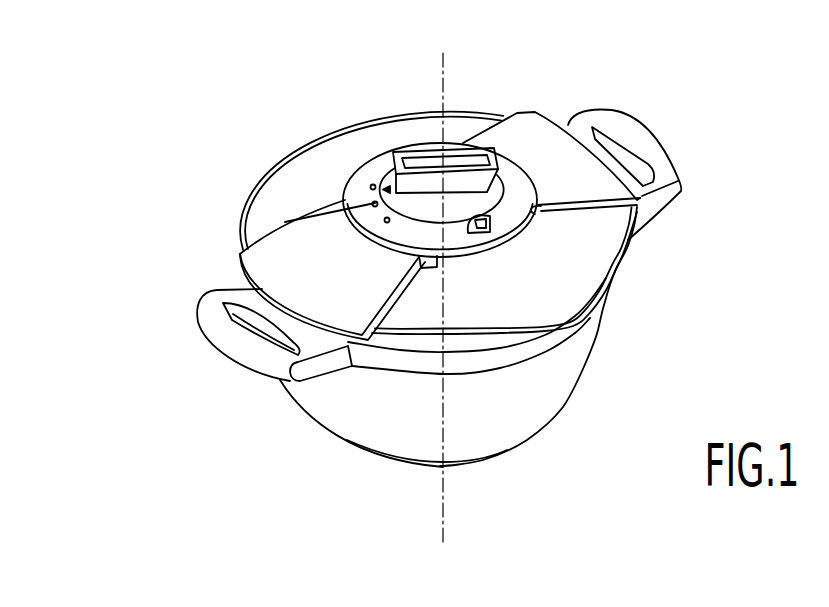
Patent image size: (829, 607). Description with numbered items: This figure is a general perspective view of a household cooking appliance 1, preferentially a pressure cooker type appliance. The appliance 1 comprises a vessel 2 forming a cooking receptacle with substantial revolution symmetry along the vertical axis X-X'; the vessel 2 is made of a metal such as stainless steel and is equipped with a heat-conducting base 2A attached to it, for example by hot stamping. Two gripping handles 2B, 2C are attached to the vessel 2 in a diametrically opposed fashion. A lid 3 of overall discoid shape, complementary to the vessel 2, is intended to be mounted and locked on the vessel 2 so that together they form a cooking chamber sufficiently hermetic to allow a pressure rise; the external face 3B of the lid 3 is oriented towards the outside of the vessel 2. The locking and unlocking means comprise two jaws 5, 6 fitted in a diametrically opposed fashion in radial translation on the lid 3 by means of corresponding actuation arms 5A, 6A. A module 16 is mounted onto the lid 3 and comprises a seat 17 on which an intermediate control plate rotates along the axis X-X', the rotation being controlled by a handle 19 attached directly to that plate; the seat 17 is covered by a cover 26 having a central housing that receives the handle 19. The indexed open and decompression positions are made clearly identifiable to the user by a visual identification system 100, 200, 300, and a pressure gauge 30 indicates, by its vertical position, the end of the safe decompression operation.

The cooking appliance 1 is at (172, 301).
The vessel 2 is at (543, 390).
The heat-conducting base 2A is at (428, 468).
The handle 2B is at (620, 128).
The handle 2C is at (232, 343).
The lid 3 is at (325, 164).
The external face 3B is at (410, 312).
The jaw 5 is at (264, 265).
The actuation arm 5A is at (300, 243).
The jaw 6 is at (545, 108).
The actuation arm 6A is at (553, 185).
The module 16 is at (333, 183).
The seat 17 is at (470, 258).
The handle 19 is at (415, 160).
The cover 26 is at (373, 184).
The pressure gauge 30 is at (492, 228).
The visual identification system 100 is at (386, 221).
The visual identification system 200 is at (372, 203).
The visual identification system 300 is at (368, 163).